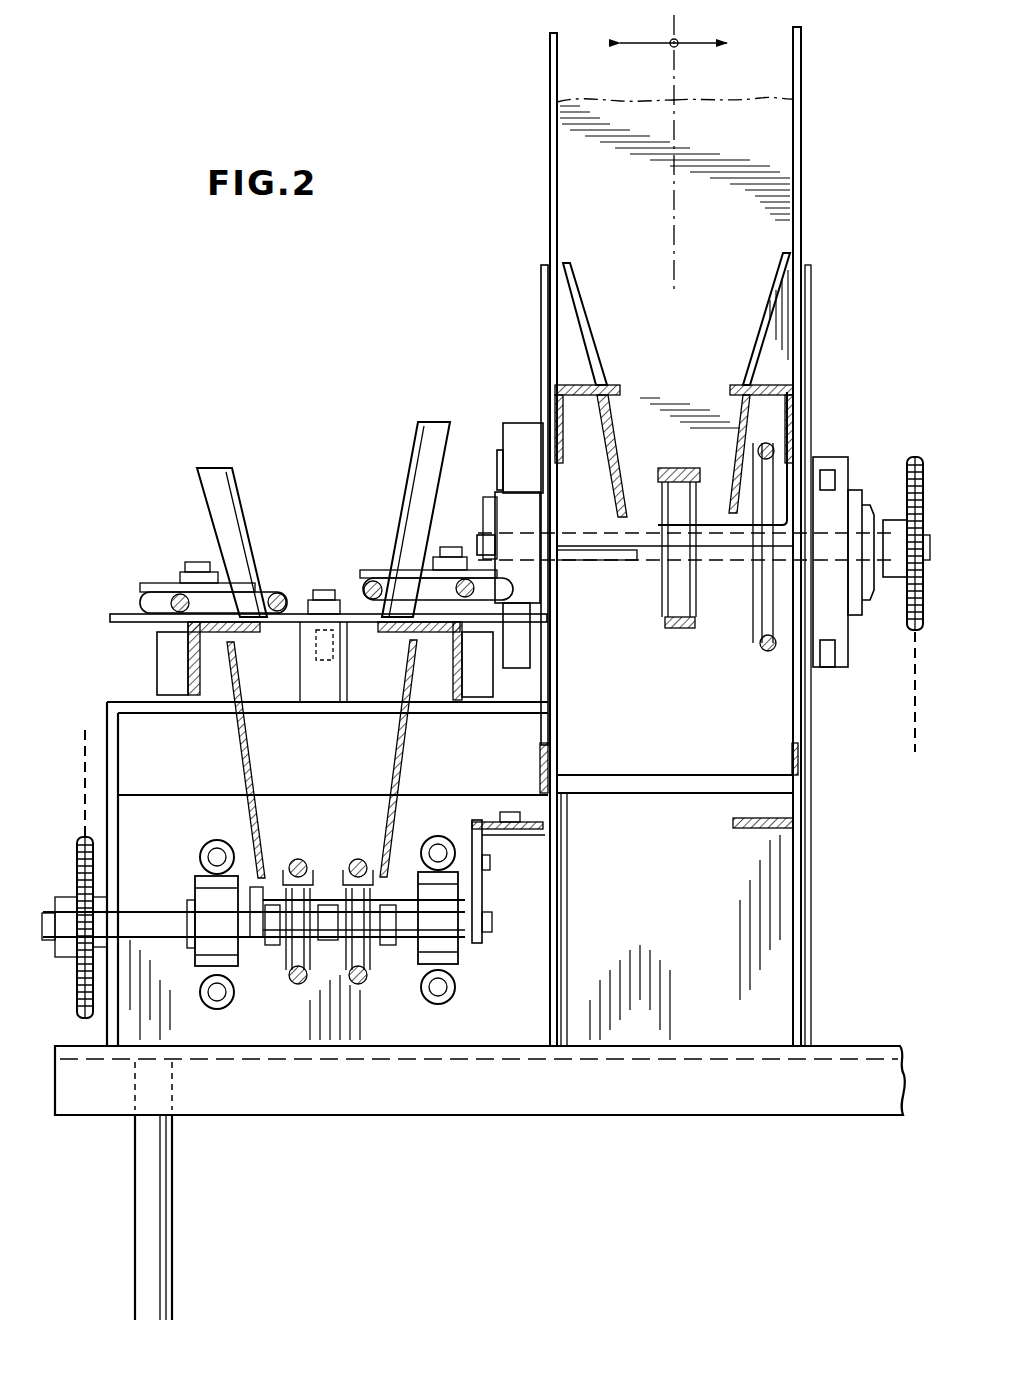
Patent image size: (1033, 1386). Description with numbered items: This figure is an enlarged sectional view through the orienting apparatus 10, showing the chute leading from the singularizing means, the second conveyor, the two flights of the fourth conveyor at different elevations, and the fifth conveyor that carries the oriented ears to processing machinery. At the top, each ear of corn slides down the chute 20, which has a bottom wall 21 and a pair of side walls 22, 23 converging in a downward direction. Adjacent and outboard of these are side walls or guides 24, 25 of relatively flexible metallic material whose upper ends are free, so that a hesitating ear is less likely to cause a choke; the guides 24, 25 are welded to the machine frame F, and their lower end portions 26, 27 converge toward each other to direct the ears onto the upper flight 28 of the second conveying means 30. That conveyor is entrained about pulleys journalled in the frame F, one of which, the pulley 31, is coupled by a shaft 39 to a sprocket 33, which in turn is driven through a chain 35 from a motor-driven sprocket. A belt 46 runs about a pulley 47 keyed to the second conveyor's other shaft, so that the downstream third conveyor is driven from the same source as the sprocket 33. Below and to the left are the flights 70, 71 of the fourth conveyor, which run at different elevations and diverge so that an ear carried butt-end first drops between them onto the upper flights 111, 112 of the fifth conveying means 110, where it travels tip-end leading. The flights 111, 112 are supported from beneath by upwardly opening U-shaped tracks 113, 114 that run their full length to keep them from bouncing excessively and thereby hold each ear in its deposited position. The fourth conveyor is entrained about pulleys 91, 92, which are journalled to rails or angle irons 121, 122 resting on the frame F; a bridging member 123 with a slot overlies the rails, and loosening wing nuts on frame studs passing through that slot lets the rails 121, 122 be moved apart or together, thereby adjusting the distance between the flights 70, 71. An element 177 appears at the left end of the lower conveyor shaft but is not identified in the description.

The apparatus 10 is at (476, 306).
The chute 20 is at (832, 176).
The bottom wall 21 is at (694, 136).
The side wall 22 is at (551, 189).
The side wall 23 is at (803, 118).
The side wall or guide 24 is at (590, 326).
The side wall or guide 25 is at (753, 323).
The lower end portion 26 is at (613, 433).
The lower end portion 27 is at (733, 412).
The upper flight 28 is at (664, 468).
The second conveying means 30 is at (664, 634).
The pulley 31 is at (655, 600).
The sprocket 33 is at (925, 486).
The chain 35 is at (918, 676).
The shaft 39 is at (592, 554).
The belt 46 is at (770, 652).
The pulley 47 is at (748, 592).
The flight 70 is at (383, 586).
The flight 71 is at (265, 602).
The pulley 91 is at (452, 572).
The pulley 92 is at (163, 583).
The fifth conveying means 110 is at (323, 836).
The upper flight 111 is at (260, 856).
The upper flight 112 is at (358, 862).
The U-shaped track 113 is at (315, 866).
The U-shaped track 114 is at (392, 870).
The rail or angle iron 121 is at (462, 686).
The rail or angle iron 122 is at (187, 657).
The bridging member 123 is at (110, 618).
The drive sprocket 177 is at (62, 803).
The machine frame F is at (806, 720).